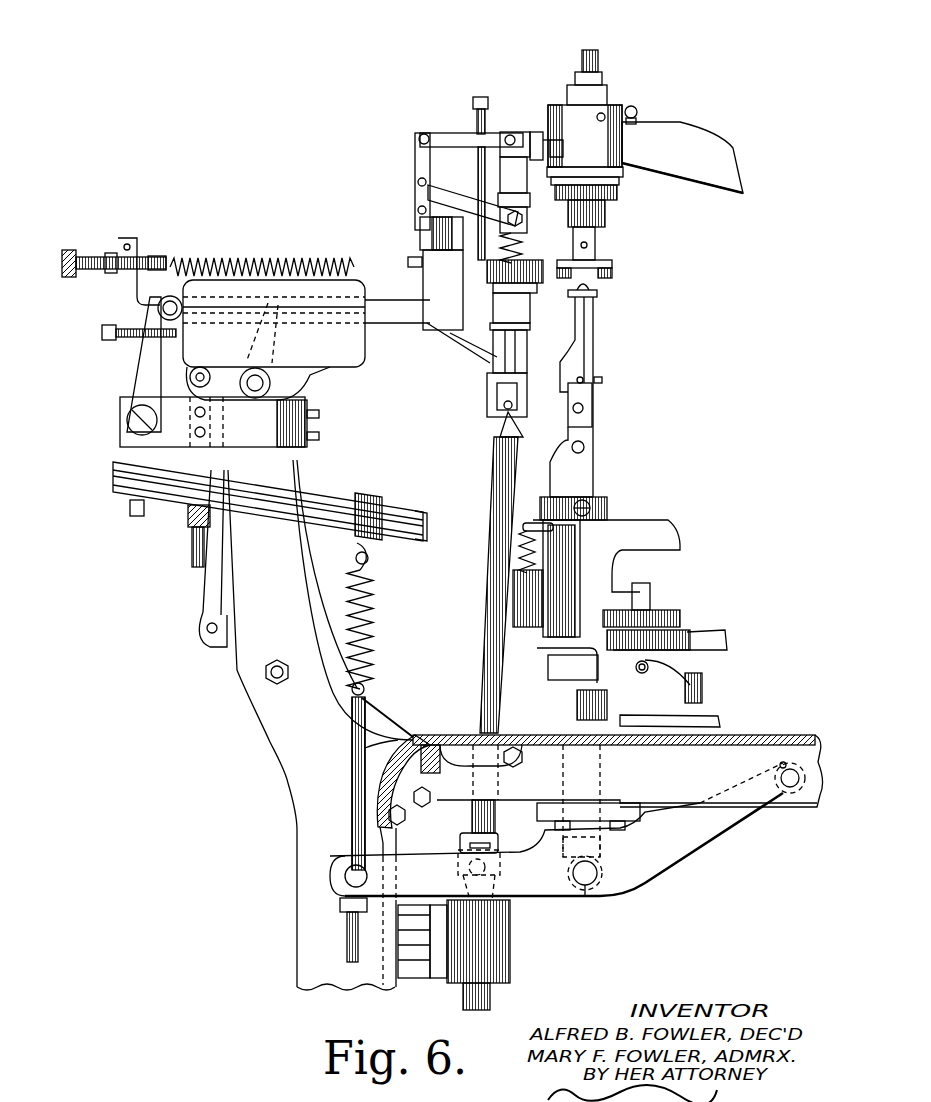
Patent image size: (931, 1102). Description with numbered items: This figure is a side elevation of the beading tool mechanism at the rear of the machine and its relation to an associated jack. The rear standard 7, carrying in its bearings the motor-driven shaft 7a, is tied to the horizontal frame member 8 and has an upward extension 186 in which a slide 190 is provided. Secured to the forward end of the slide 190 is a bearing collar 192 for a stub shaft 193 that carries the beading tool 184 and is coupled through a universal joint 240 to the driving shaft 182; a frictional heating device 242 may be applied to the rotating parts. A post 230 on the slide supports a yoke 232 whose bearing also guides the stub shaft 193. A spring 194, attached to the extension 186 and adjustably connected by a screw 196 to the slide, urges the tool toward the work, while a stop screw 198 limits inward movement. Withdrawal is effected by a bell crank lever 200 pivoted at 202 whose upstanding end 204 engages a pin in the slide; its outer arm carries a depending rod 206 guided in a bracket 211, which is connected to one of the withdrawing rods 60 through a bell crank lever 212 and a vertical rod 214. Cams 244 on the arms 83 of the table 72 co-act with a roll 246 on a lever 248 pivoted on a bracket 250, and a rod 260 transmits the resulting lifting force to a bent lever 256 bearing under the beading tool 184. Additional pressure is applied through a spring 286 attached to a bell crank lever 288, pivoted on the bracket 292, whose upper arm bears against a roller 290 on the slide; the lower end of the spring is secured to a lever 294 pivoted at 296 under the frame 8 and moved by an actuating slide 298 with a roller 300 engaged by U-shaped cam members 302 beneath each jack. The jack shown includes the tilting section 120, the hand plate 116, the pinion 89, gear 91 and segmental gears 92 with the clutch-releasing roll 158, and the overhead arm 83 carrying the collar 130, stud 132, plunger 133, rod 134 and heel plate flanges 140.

The standard 7 is at (316, 925).
The shaft 7a is at (490, 993).
The frame member 8 is at (790, 740).
The rod 60 is at (700, 715).
The turret or table 72 is at (650, 520).
The diverging arms 83 is at (718, 148).
The pinion 89 is at (650, 607).
The gear 91 is at (680, 625).
The segmental gears 92 is at (690, 640).
The hand plate 116 is at (545, 525).
The section 120 is at (600, 294).
The collar 130 is at (575, 118).
The stud 132 is at (600, 213).
The plunger 133 is at (595, 236).
The rod 134 is at (596, 55).
The flanges 140 is at (614, 270).
The roll 158 is at (700, 675).
The shaft 182 is at (490, 625).
The beading tool 184 is at (540, 288).
The upward extension 186 is at (243, 597).
The slide 190 is at (397, 310).
The bearing collar 192 is at (513, 353).
The stub shaft 193 is at (560, 330).
The spring 194 is at (172, 265).
The screw 196 is at (90, 255).
The stop screw 198 is at (130, 335).
The bell crank lever 200 is at (210, 380).
The pivot 202 is at (225, 383).
The upstanding end 204 is at (283, 333).
The depending rod 206 is at (190, 536).
The bracket 211 is at (190, 515).
The bell crank lever 212 is at (222, 642).
The vertical rod 214 is at (215, 575).
The post 230 is at (480, 240).
The yoke 232 is at (483, 208).
The universal joint 240 is at (505, 418).
The frictional heating device 242 is at (490, 325).
The cams 244 is at (557, 137).
The roll 246 is at (535, 132).
The lever 248 is at (455, 135).
The bracket 250 is at (420, 152).
The bent lever 256 is at (463, 290).
The rod 260 is at (443, 247).
The spring 286 is at (374, 615).
The bell crank lever 288 is at (148, 378).
The roller 290 is at (160, 300).
The bracket 292 is at (260, 440).
The lever 294 is at (690, 858).
The pivot 296 is at (792, 790).
The actuating slide 298 is at (690, 730).
The roller 300 is at (585, 700).
The U-shaped cam members 302 is at (590, 648).